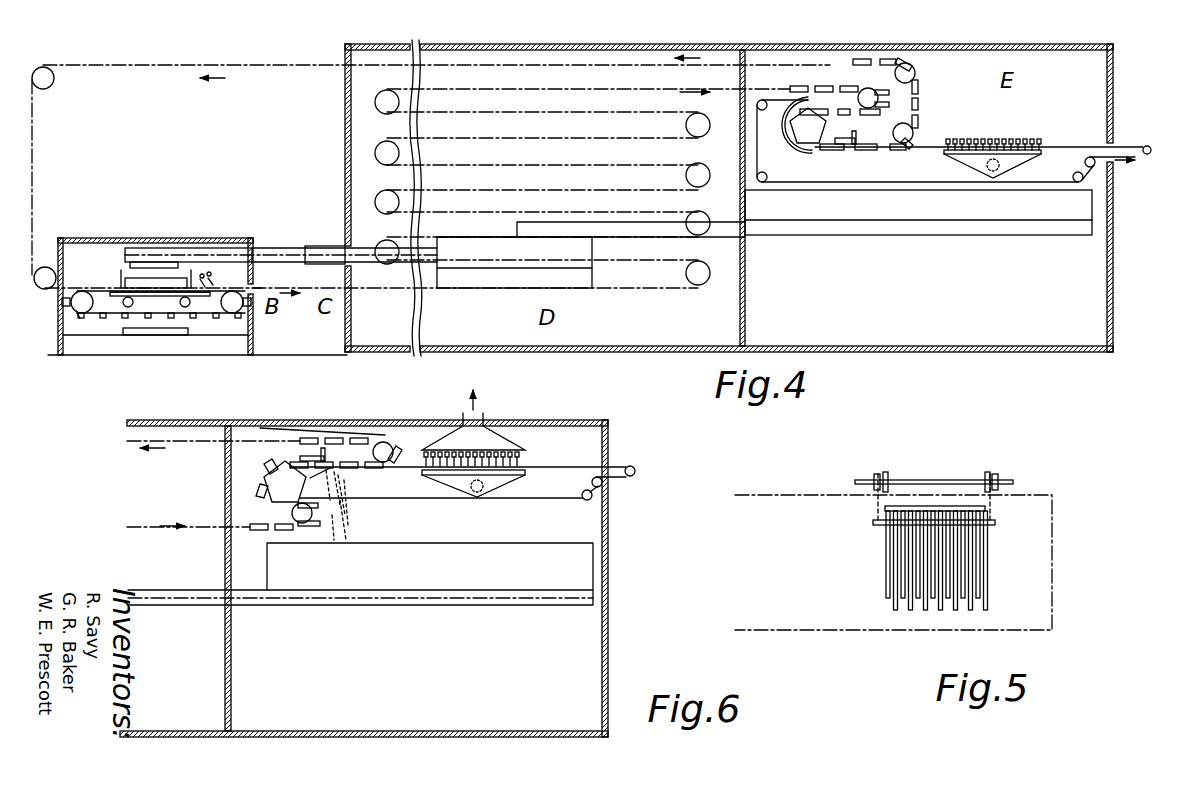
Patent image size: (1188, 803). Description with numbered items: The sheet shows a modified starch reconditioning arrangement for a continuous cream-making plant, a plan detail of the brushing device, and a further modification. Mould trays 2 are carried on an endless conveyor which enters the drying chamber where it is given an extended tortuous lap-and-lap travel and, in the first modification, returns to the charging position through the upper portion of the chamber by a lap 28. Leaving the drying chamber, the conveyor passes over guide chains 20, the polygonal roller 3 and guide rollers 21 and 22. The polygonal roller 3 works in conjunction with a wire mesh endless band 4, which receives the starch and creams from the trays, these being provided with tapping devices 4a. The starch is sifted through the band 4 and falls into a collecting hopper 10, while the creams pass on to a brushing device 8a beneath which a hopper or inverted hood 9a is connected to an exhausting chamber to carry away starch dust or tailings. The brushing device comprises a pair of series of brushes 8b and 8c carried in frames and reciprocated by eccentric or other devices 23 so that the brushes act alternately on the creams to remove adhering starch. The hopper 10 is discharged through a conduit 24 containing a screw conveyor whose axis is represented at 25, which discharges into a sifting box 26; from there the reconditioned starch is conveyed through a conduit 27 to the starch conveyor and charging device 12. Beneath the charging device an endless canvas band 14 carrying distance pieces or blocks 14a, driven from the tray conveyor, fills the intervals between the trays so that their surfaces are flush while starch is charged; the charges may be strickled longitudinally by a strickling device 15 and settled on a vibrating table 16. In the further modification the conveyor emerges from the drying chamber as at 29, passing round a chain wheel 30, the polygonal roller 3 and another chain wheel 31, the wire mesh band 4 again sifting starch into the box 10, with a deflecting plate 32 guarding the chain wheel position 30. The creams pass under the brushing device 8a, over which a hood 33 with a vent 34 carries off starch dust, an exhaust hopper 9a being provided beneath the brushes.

In FIG. 4, the mould trays 2 is at (251, 285).
In FIG. 4, the polygonal roller 3 is at (808, 125).
In FIG. 6, the polygonal roller 3 is at (281, 480).
In FIG. 4, the wire mesh endless band 4 is at (762, 170).
In FIG. 6, the wire mesh endless band 4 is at (402, 472).
In FIG. 4, the tapping devices 4a is at (850, 130).
In FIG. 4, the brushing device 8a is at (996, 140).
In FIG. 6, the brushing device 8a is at (523, 458).
In FIG. 5, the series of brushes 8b is at (996, 522).
In FIG. 5, the series of brushes 8c is at (979, 573).
In FIG. 4, the hopper or inverted hood 9a is at (1020, 154).
In FIG. 6, the hopper or inverted hood 9a is at (492, 478).
In FIG. 4, the collecting hopper 10 is at (764, 213).
In FIG. 6, the collecting hopper 10 is at (360, 574).
In FIG. 4, the starch conveyor and charging device 12 is at (138, 283).
In FIG. 4, the endless canvas band 14 is at (203, 315).
In FIG. 4, the distance pieces or blocks 14a is at (78, 317).
In FIG. 4, the strickling device 15 is at (213, 273).
In FIG. 4, the vibrating table 16 is at (148, 293).
In FIG. 4, the guide chains 20 is at (839, 89).
In FIG. 4, the guide roller 21 is at (915, 130).
In FIG. 4, the guide roller 22 is at (916, 68).
In FIG. 5, the eccentric devices 23 is at (874, 476).
In FIG. 4, the conduit 24 is at (742, 240).
In FIG. 4, the conveyor axis 25 is at (822, 234).
In FIG. 4, the sifting box 26 is at (590, 262).
In FIG. 4, the conduit 27 is at (323, 252).
In FIG. 4, the lap 28 is at (282, 68).
In FIG. 6, the conveyor emergence point 29 is at (196, 533).
In FIG. 6, the chain wheel 30 is at (302, 526).
In FIG. 6, the chain wheel 31 is at (383, 445).
In FIG. 6, the deflecting plate 32 is at (332, 492).
In FIG. 6, the hood 33 is at (473, 431).
In FIG. 6, the vent 34 is at (481, 417).